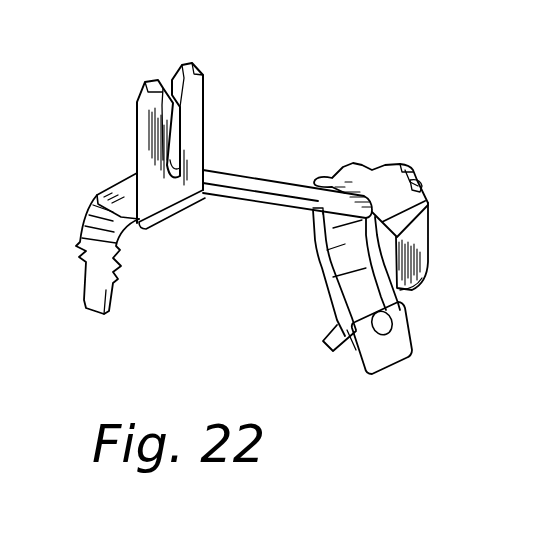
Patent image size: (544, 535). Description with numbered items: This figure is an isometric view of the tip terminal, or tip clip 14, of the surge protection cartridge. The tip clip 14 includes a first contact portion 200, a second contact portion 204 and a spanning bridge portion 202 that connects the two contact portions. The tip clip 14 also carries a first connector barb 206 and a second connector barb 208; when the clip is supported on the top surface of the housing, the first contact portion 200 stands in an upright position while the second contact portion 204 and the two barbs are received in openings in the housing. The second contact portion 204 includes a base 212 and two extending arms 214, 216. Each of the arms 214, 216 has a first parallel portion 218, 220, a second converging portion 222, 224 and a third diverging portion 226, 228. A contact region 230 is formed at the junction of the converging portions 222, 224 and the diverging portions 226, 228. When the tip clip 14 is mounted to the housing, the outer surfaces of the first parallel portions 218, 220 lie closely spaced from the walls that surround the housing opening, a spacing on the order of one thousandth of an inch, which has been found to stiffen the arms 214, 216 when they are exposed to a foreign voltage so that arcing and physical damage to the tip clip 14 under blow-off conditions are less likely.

The tip clip 14 is at (299, 126).
The first contact portion 200 is at (198, 100).
The spanning bridge portion 202 is at (242, 183).
The second contact portion 204 is at (353, 166).
The first connector barb 206 is at (96, 302).
The second connector barb 208 is at (424, 182).
The base 212 is at (378, 167).
The arm 214 is at (327, 293).
The arm 216 is at (428, 277).
The first parallel portion 218 is at (316, 217).
The first parallel portion 220 is at (418, 231).
The second converging portion 222 is at (345, 258).
The second converging portion 224 is at (408, 284).
The third diverging portion 226 is at (333, 345).
The third diverging portion 228 is at (390, 353).
The contact region 230 is at (346, 340).